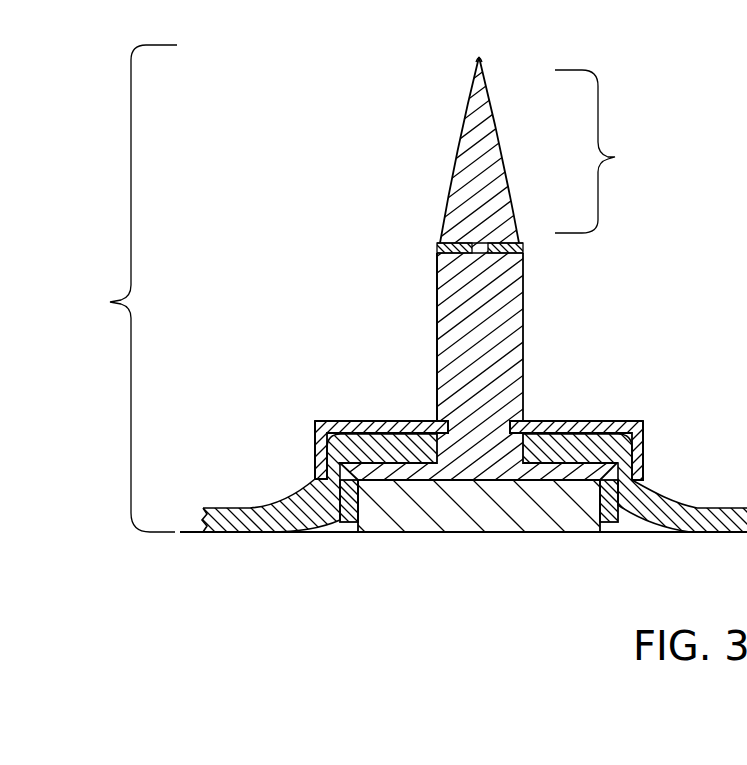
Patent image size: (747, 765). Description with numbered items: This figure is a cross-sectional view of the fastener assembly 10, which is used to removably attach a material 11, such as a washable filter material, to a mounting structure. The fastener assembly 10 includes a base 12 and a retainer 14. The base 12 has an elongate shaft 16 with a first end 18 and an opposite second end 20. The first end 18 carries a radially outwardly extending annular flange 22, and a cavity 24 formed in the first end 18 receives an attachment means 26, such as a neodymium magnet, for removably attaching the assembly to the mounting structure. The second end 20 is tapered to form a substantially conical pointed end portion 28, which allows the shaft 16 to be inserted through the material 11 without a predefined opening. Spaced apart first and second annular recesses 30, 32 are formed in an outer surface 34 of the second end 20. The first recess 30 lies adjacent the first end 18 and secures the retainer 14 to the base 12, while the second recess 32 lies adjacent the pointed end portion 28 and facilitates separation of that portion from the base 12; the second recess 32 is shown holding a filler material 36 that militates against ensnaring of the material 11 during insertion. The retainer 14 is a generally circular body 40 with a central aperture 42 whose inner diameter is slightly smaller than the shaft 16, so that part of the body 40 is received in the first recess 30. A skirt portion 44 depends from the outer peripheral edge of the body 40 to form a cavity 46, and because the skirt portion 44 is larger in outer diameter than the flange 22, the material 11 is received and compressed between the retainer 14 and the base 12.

The fastener assembly 10 is at (130, 288).
The material 11 is at (688, 507).
The base 12 is at (445, 168).
The retainer 14 is at (308, 410).
The elongate shaft 16 is at (437, 273).
The first end 18 is at (540, 447).
The second end 20 is at (479, 57).
The annular flange 22 is at (618, 512).
The cavity 24 is at (358, 510).
The attachment means 26 is at (473, 533).
The pointed end portion 28 is at (600, 151).
The first annular recess 30 is at (525, 421).
The second annular recess 32 is at (437, 250).
The outer surface 34 is at (437, 340).
The filler material 36 is at (523, 248).
The body 40 is at (340, 420).
The central aperture 42 is at (444, 421).
The skirt portion 44 is at (315, 450).
The cavity 46 is at (643, 450).